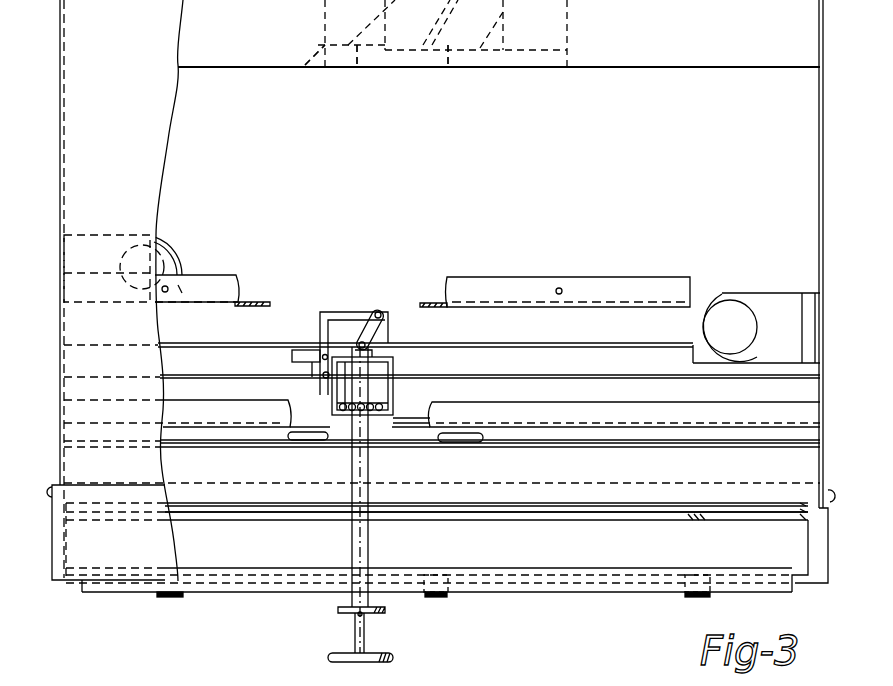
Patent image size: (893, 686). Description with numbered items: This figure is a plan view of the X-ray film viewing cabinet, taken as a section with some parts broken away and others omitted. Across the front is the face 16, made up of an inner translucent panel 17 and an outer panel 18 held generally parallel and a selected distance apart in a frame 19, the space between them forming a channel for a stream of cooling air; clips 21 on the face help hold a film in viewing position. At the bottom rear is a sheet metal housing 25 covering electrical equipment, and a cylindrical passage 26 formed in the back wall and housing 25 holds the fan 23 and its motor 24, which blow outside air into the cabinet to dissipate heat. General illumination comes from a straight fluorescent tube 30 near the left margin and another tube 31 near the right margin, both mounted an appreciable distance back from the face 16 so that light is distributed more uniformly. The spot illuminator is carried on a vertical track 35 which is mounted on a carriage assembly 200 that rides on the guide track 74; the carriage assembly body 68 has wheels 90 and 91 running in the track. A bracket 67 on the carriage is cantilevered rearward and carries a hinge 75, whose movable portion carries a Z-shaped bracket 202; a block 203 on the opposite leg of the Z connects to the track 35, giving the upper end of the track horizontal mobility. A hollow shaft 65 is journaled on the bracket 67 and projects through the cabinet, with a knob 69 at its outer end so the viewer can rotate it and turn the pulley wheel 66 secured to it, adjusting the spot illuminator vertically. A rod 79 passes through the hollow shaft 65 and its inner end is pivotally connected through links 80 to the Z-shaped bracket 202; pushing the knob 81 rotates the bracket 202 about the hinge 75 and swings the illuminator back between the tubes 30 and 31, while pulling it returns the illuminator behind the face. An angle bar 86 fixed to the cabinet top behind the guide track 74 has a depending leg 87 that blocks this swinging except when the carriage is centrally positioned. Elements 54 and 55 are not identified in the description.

The face 16 is at (186, 601).
The inner translucent panel 17 is at (548, 524).
The outer panel 18 is at (650, 578).
The frame 19 is at (62, 582).
The clips 21 is at (422, 598).
The fan 23 is at (357, 69).
The motor 24 is at (448, 69).
The sheet metal housing 25 is at (688, 70).
The cylindrical passage 26 is at (305, 67).
The fluorescent tube 30 is at (176, 253).
The fluorescent tube 31 is at (716, 300).
The track 35 is at (394, 372).
The member 54 is at (567, 682).
The member 55 is at (504, 682).
The shaft 65 is at (336, 610).
The pulley wheel 66 is at (385, 405).
The bracket 67 is at (408, 430).
The carriage assembly body 68 is at (421, 428).
The knob 69 is at (352, 614).
The guide track 74 is at (572, 440).
The hinge 75 is at (318, 363).
The rod 79 is at (365, 637).
The links 80 is at (379, 311).
The knob 81 is at (345, 663).
The angle bar 86 is at (566, 277).
The depending leg 87 is at (441, 308).
The wheel 90 is at (292, 441).
The wheel 91 is at (450, 443).
The carriage assembly 200 is at (311, 338).
The Z-shaped bracket 202 is at (350, 312).
The block 203 is at (384, 346).